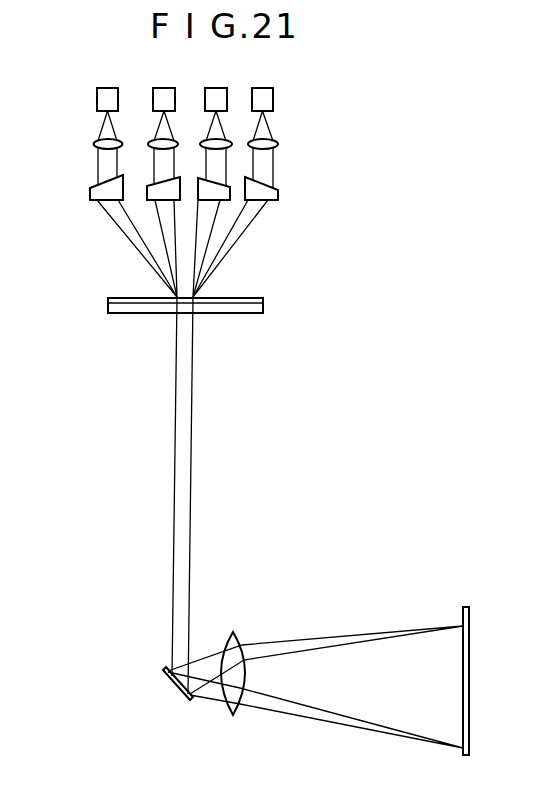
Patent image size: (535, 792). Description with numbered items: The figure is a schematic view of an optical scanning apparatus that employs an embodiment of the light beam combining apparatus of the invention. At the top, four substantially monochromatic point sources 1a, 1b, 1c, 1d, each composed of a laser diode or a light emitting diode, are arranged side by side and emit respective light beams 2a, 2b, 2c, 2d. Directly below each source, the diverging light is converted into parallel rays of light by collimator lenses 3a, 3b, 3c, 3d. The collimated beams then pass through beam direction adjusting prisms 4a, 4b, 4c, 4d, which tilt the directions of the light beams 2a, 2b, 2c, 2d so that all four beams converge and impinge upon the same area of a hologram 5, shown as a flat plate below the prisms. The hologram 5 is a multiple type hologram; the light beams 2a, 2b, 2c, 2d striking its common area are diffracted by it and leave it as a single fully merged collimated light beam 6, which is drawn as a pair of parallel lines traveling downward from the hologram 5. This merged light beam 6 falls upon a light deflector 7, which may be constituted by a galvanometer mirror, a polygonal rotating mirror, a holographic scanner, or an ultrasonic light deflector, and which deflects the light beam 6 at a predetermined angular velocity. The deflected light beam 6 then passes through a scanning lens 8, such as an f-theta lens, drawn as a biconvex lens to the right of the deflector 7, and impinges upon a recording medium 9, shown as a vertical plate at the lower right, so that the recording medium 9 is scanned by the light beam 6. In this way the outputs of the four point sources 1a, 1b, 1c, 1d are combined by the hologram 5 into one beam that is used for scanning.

The point source 1a is at (100, 88).
The point source 1b is at (163, 88).
The point source 1c is at (217, 88).
The point source 1d is at (260, 88).
The light beam 2a is at (112, 215).
The light beam 2b is at (166, 226).
The light beam 2c is at (204, 233).
The light beam 2d is at (257, 213).
The collimator lens 3a is at (99, 140).
The collimator lens 3b is at (149, 142).
The collimator lens 3c is at (202, 142).
The collimator lens 3d is at (277, 140).
The beam direction adjusting prism 4a is at (91, 192).
The beam direction adjusting prism 4b is at (149, 187).
The beam direction adjusting prism 4c is at (231, 189).
The beam direction adjusting prism 4d is at (274, 191).
The hologram 5 is at (265, 307).
The light beam 6 is at (173, 566).
The light deflector 7 is at (181, 688).
The scanning lens 8 is at (233, 716).
The recording medium 9 is at (468, 752).